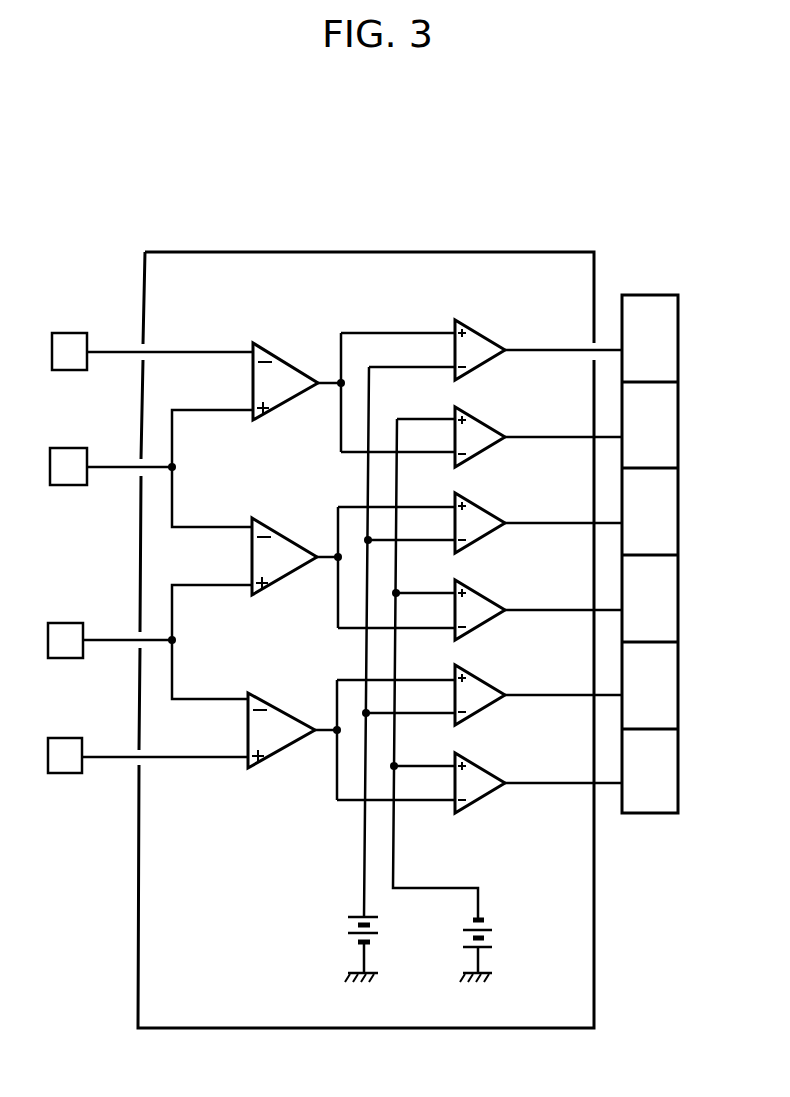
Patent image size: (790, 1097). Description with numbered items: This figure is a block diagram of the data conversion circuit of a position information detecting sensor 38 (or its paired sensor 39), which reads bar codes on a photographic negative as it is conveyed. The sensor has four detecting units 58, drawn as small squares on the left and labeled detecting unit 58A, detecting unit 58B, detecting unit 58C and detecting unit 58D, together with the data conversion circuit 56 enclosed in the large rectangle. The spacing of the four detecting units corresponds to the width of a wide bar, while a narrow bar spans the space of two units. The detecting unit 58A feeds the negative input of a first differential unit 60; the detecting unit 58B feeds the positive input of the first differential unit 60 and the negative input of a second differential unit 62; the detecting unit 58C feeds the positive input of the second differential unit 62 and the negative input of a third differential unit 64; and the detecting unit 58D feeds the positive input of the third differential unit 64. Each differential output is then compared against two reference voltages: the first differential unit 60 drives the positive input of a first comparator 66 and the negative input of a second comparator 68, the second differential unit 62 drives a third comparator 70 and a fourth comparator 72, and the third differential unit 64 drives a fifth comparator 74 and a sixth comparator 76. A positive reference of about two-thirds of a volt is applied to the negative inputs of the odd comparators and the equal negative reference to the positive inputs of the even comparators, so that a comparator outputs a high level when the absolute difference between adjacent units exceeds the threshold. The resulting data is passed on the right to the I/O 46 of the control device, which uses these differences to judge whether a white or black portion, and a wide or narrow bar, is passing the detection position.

The position information detecting sensor 38 is at (303, 247).
The position information detecting sensor 39 is at (366, 640).
The I/O 46 is at (648, 295).
The data conversion circuit 56 is at (440, 252).
The detecting units 58 is at (65, 248).
The detecting unit 58A is at (75, 333).
The detecting unit 58B is at (73, 448).
The detecting unit 58C is at (69, 623).
The detecting unit 58D is at (68, 738).
The first differential unit 60 is at (295, 363).
The second differential unit 62 is at (293, 540).
The third differential unit 64 is at (292, 712).
The first comparator 66 is at (492, 340).
The second comparator 68 is at (492, 427).
The third comparator 70 is at (496, 512).
The fourth comparator 72 is at (495, 599).
The fifth comparator 74 is at (495, 684).
The sixth comparator 76 is at (495, 772).